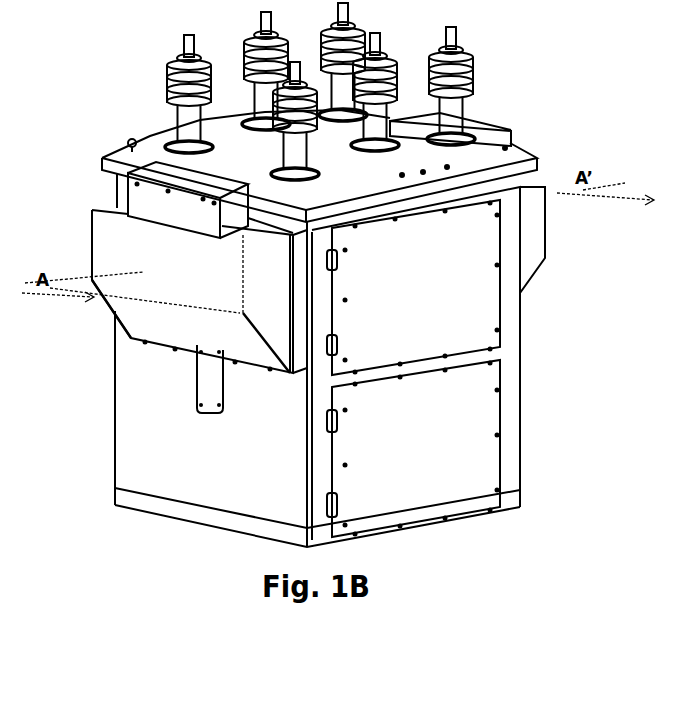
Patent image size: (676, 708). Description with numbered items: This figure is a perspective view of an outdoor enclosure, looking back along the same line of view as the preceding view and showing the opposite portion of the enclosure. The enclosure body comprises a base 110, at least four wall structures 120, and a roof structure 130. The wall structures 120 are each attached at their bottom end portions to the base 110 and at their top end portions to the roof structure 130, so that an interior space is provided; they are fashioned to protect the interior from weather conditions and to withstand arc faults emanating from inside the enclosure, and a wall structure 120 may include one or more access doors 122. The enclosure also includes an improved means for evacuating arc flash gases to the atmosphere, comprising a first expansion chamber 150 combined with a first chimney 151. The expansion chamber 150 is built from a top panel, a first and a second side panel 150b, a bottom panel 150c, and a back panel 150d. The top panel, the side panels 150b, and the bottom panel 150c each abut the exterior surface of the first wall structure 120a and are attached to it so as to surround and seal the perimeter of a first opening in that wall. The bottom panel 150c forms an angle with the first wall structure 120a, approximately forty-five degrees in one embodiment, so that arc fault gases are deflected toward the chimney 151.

The base 110 is at (508, 493).
The wall structures 120 is at (325, 367).
The first wall structure 120a is at (172, 404).
The access doors 122 is at (433, 397).
The roof structure 130 is at (510, 96).
The first expansion chamber 150 is at (153, 224).
The second side panel 150b is at (290, 287).
The bottom panel 150c is at (182, 315).
The back panel 150d is at (212, 272).
The first chimney 151 is at (94, 188).